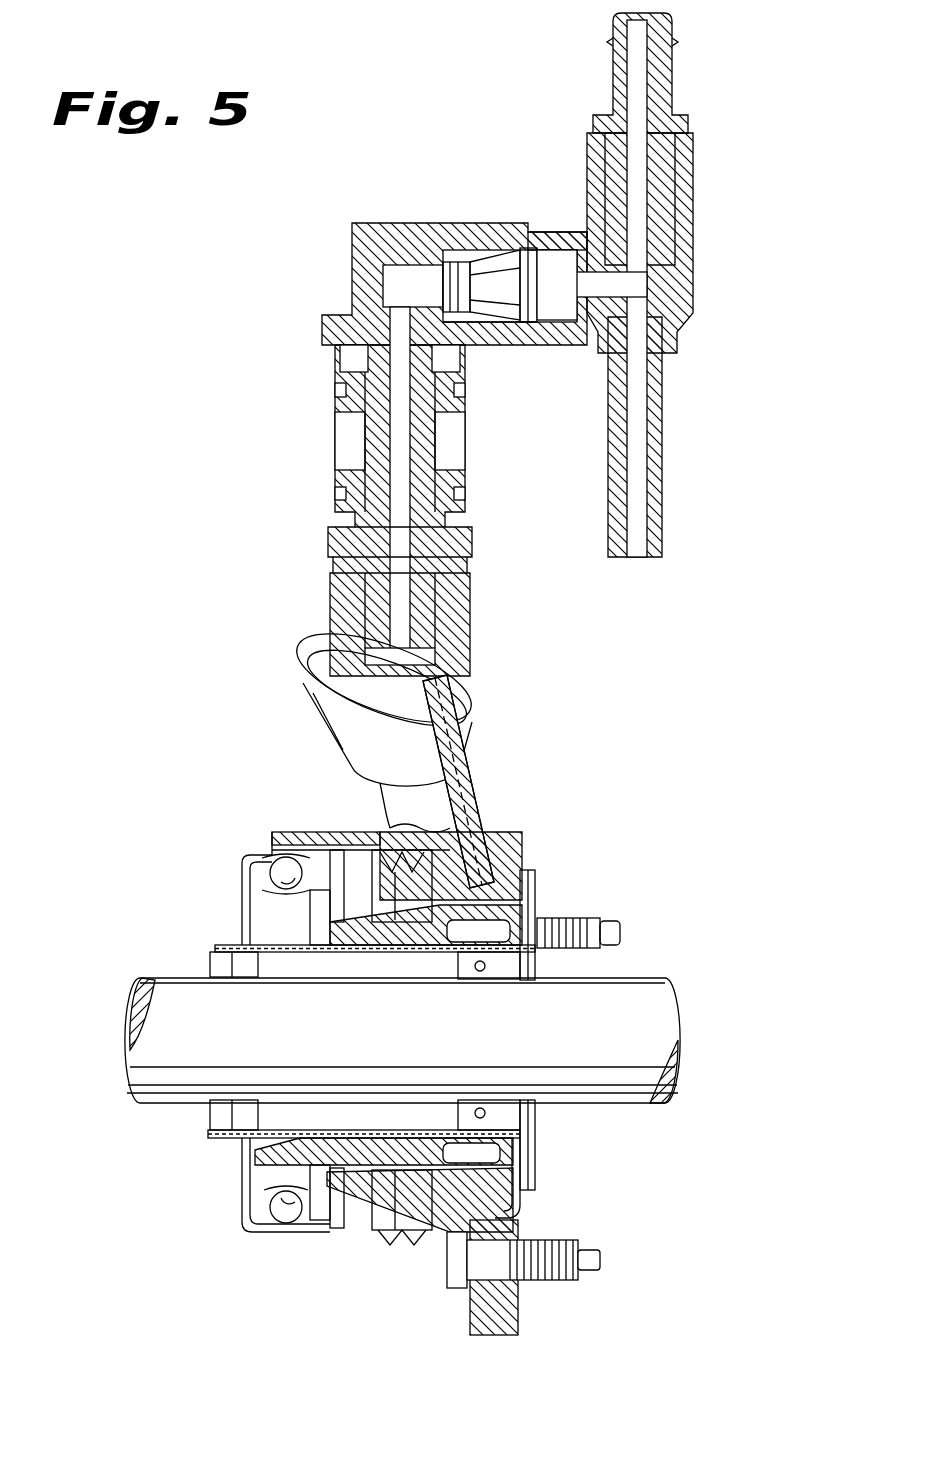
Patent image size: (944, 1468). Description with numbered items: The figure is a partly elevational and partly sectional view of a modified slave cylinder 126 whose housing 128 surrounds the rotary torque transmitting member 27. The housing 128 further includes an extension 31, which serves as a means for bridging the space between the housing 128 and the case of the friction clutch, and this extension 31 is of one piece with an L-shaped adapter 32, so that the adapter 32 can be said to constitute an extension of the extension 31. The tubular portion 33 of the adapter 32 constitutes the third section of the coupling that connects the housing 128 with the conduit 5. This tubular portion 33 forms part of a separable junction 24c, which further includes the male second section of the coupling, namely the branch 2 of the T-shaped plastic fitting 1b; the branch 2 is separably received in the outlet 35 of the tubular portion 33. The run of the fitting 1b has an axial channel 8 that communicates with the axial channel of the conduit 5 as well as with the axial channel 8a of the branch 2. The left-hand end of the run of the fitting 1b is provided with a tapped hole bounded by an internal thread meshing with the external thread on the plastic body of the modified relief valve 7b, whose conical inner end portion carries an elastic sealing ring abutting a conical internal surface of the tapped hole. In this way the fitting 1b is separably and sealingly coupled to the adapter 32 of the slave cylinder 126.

The adapter 32 is at (348, 218).
The tubular portion 33 is at (476, 230).
The separable junction 24c is at (546, 222).
The relief valve 7b is at (686, 86).
The fitting 1b is at (700, 232).
The axial channel 8a is at (622, 283).
The axial channel 8 is at (655, 300).
The conduit 5 is at (660, 516).
The branch 2 is at (506, 322).
The outlet 35 is at (566, 346).
The extension 31 is at (480, 700).
The housing 128 is at (537, 832).
The rotary torque transmitting member 27 is at (640, 985).
The slave cylinder 126 is at (556, 1154).